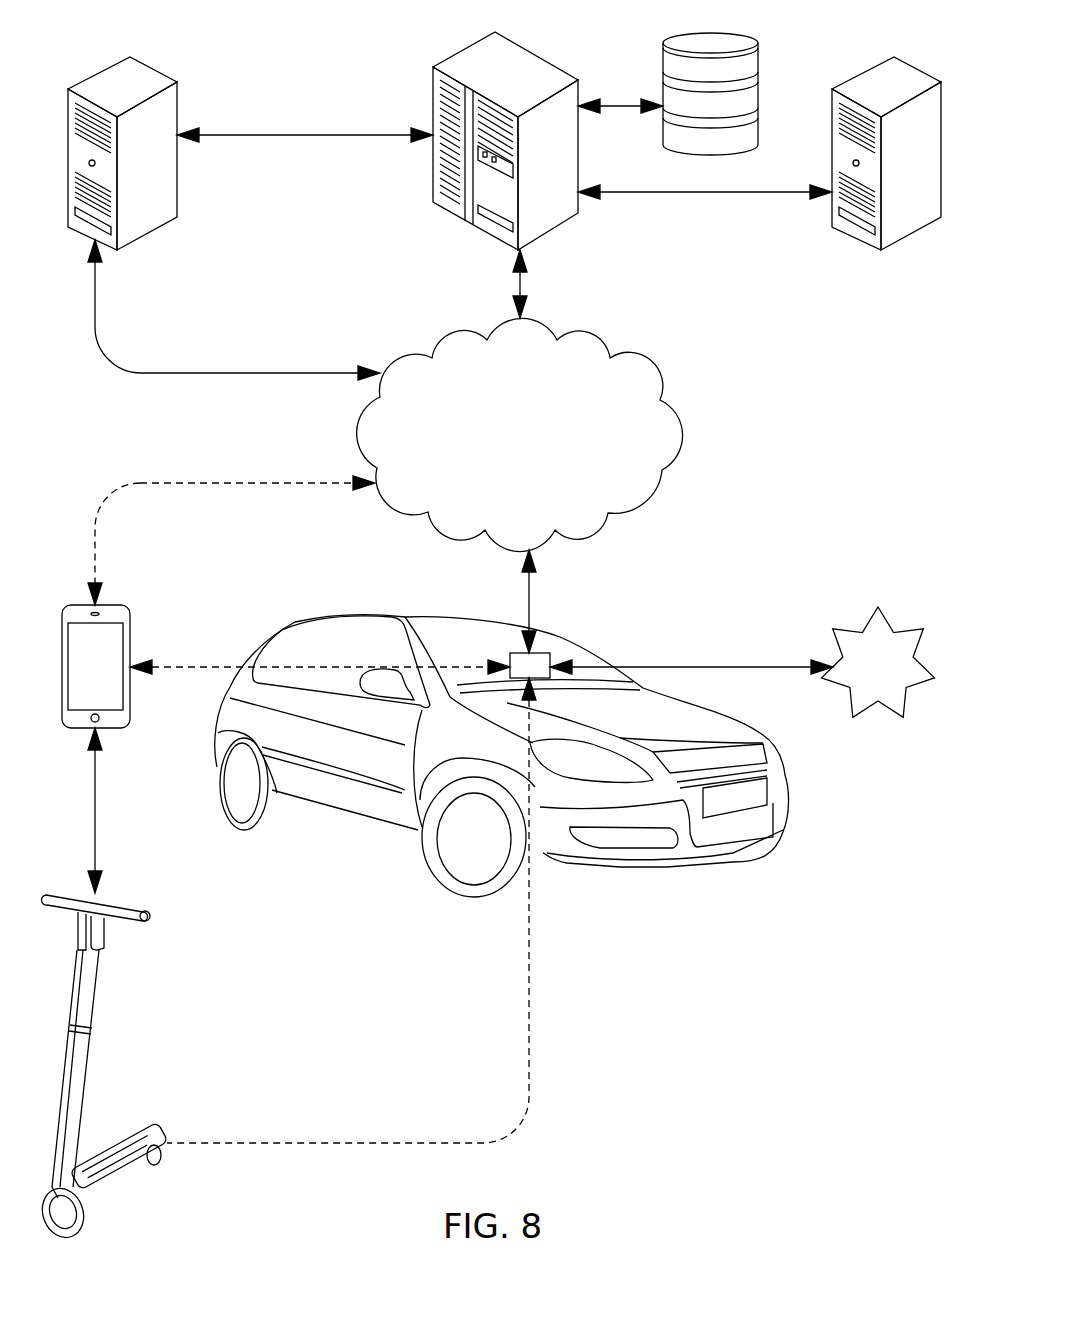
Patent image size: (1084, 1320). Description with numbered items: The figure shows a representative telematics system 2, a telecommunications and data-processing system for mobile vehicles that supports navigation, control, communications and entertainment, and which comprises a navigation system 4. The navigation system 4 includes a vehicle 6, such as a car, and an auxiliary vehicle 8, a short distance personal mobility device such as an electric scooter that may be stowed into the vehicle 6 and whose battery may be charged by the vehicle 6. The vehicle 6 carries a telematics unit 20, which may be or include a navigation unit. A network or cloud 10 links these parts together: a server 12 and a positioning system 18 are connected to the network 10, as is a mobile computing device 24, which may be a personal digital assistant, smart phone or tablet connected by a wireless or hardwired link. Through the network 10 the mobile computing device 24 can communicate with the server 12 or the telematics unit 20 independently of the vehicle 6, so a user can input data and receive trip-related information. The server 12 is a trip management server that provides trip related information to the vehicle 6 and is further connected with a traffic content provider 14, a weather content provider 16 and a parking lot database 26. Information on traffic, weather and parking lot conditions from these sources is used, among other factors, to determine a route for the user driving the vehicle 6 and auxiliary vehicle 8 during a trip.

The telematics system 2 is at (283, 22).
The navigation system 4 is at (288, 68).
The vehicle 6 is at (722, 718).
The auxiliary vehicle 8 is at (120, 897).
The network or cloud 10 is at (638, 354).
The server 12 is at (537, 52).
The traffic content provider 14 is at (915, 66).
The weather content provider 16 is at (152, 67).
The positioning system 18 is at (890, 622).
The telematics unit 20 is at (546, 653).
The mobile computing device 24 is at (118, 605).
The parking lot database 26 is at (715, 36).